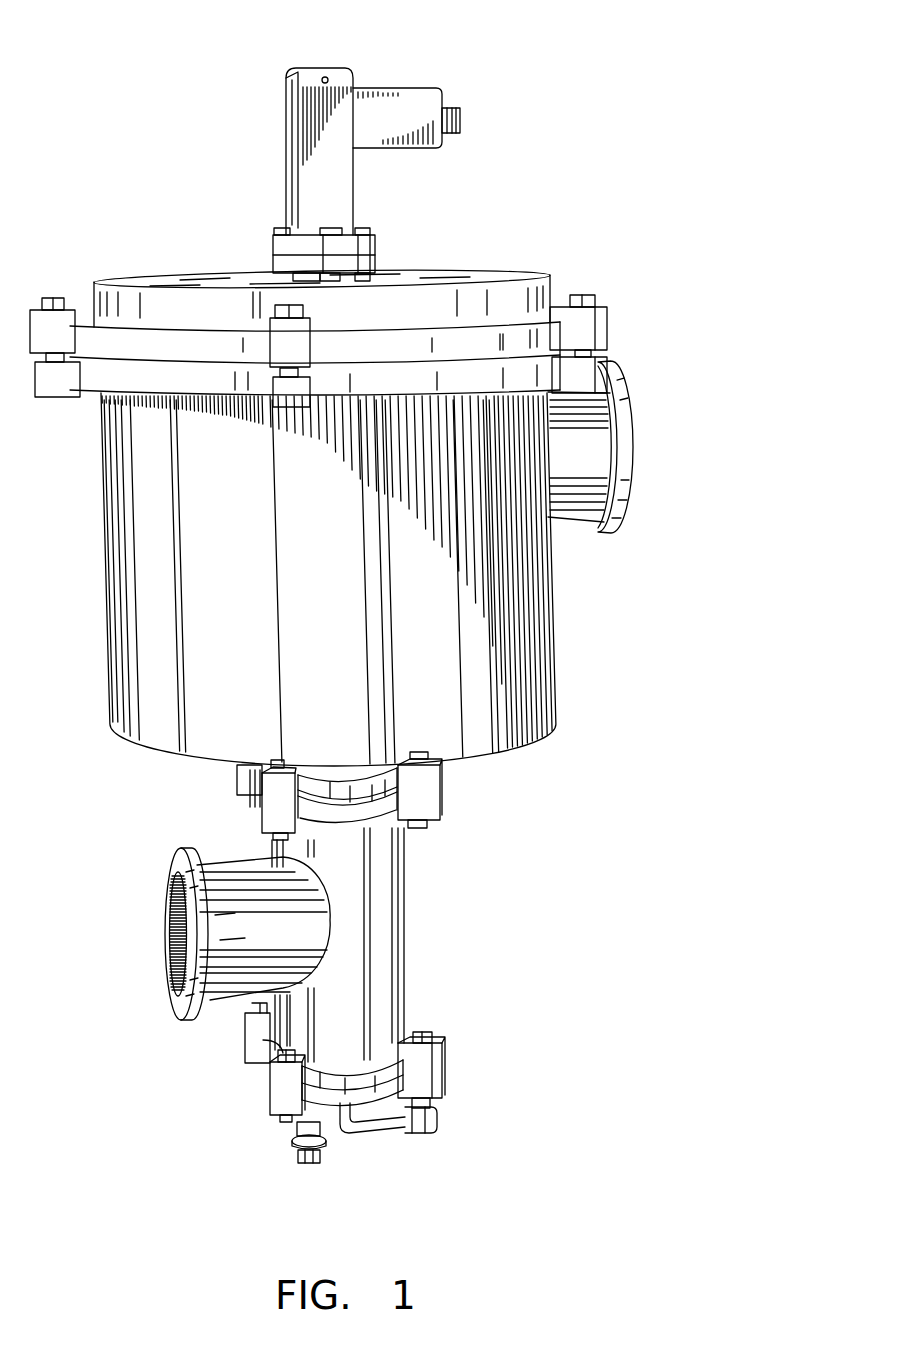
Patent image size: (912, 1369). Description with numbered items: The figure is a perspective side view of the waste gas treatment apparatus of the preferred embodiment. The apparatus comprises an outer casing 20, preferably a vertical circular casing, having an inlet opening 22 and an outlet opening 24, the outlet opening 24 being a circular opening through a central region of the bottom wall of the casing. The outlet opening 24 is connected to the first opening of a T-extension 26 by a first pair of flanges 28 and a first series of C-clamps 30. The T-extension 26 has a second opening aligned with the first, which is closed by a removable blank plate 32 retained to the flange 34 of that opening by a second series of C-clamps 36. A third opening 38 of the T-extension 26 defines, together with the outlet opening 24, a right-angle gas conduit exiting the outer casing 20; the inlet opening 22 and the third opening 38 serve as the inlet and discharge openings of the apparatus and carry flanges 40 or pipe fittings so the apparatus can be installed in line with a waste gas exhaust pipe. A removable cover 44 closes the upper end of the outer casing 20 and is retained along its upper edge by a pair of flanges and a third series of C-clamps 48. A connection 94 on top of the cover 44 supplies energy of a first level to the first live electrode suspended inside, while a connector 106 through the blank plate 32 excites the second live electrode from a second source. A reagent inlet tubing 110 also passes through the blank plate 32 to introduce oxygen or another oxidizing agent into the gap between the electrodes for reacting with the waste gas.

The outer casing 20 is at (555, 660).
The inlet opening 22 is at (678, 407).
The outlet opening 24 is at (407, 832).
The T-extension 26 is at (410, 963).
The first pair of flanges 28 is at (350, 815).
The first series of C-clamps 30 is at (442, 796).
The removable blank plate 32 is at (353, 1095).
The flange 34 is at (413, 1042).
The second series of C-clamps 36 is at (445, 1056).
The third opening 38 is at (118, 951).
The flanges 40 is at (600, 528).
The removable cover 44 is at (478, 272).
The third series of C-clamps 48 is at (609, 321).
The connection 94 is at (460, 119).
The connector 106 is at (292, 1160).
The reagent inlet tubing 110 is at (390, 1132).